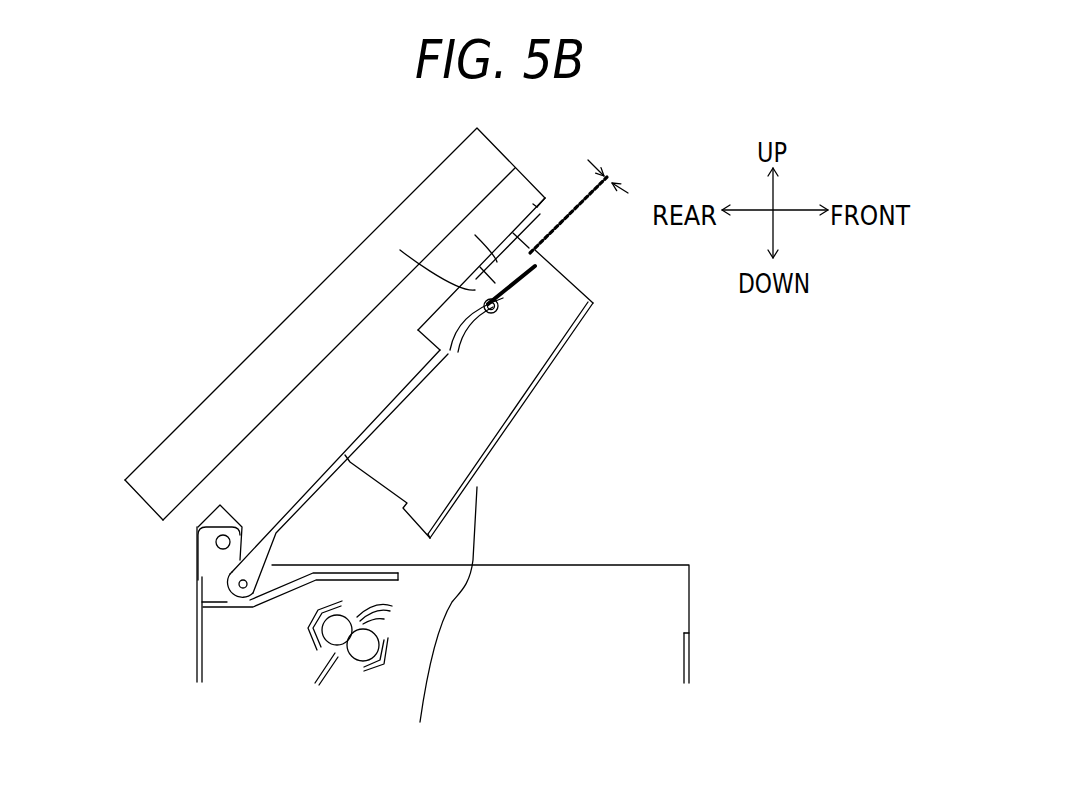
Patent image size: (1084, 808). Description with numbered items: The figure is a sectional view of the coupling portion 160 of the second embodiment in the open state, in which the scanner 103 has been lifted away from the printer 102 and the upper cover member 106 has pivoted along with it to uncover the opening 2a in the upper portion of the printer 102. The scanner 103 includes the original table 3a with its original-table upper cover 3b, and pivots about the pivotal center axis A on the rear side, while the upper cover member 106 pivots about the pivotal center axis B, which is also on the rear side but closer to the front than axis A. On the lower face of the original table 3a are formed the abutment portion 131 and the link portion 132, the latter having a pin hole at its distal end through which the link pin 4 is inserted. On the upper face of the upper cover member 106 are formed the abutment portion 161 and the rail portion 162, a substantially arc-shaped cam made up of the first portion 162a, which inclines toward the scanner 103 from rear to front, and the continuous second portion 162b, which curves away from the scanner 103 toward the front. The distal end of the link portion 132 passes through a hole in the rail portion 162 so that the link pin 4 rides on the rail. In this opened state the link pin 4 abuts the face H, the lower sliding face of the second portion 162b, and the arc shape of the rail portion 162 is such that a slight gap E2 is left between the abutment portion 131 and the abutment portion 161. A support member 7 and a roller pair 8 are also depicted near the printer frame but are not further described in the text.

The scanner 103 is at (228, 318).
The original table 3a is at (305, 382).
The original-table upper cover 3b is at (222, 412).
The abutment portion 131 is at (527, 240).
The link portion 132 is at (490, 305).
The abutment portion 161 is at (475, 235).
The face H is at (400, 250).
The gap E2 is at (616, 168).
The coupling portion 160 is at (550, 252).
The second portion 162b is at (507, 298).
The link pin 4 is at (492, 308).
The rail portion 162 is at (470, 328).
The first portion 162a is at (456, 330).
The opening 2a is at (581, 561).
The support member 7 is at (198, 615).
The pivotal center axis A is at (216, 543).
The pivotal center axis B is at (239, 585).
The printer 102 is at (282, 697).
The upper cover member 106 is at (440, 625).
The conveyance roller pair 8 is at (359, 642).